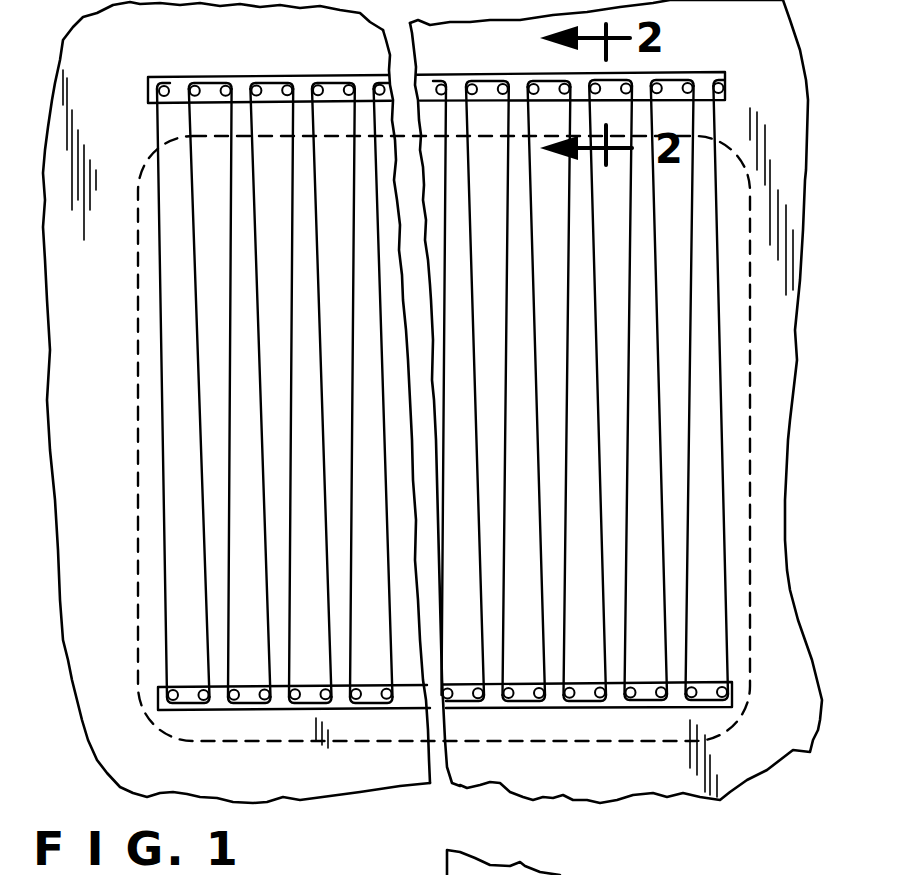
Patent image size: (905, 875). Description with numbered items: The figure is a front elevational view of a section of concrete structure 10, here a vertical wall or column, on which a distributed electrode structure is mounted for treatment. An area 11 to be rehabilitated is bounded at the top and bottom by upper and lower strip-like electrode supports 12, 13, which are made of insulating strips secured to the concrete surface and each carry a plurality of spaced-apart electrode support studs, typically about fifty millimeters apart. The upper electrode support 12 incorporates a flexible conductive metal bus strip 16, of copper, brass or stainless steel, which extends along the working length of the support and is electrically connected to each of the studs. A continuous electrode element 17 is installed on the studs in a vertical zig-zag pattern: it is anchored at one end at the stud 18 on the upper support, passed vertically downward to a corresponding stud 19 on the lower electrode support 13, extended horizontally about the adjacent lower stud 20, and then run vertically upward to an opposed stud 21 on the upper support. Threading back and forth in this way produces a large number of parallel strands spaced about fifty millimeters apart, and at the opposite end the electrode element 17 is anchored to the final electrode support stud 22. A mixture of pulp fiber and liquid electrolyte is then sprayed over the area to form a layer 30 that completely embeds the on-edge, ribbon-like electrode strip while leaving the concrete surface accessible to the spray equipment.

The section of concrete structure 10 is at (760, 22).
The area to be rehabilitated 11 is at (678, 420).
The upper electrode support 12 is at (668, 78).
The lower electrode support 13 is at (617, 705).
The flexible conductive metal bus strip 16 is at (452, 86).
The continuous electrode element 17 is at (198, 333).
The stud 18 is at (164, 88).
The stud 19 is at (160, 698).
The adjacent lower stud 20 is at (204, 700).
The opposed stud 21 is at (197, 88).
The final electrode support stud 22 is at (723, 89).
The layer of pulp fiber and liquid electrolyte 30 is at (750, 348).